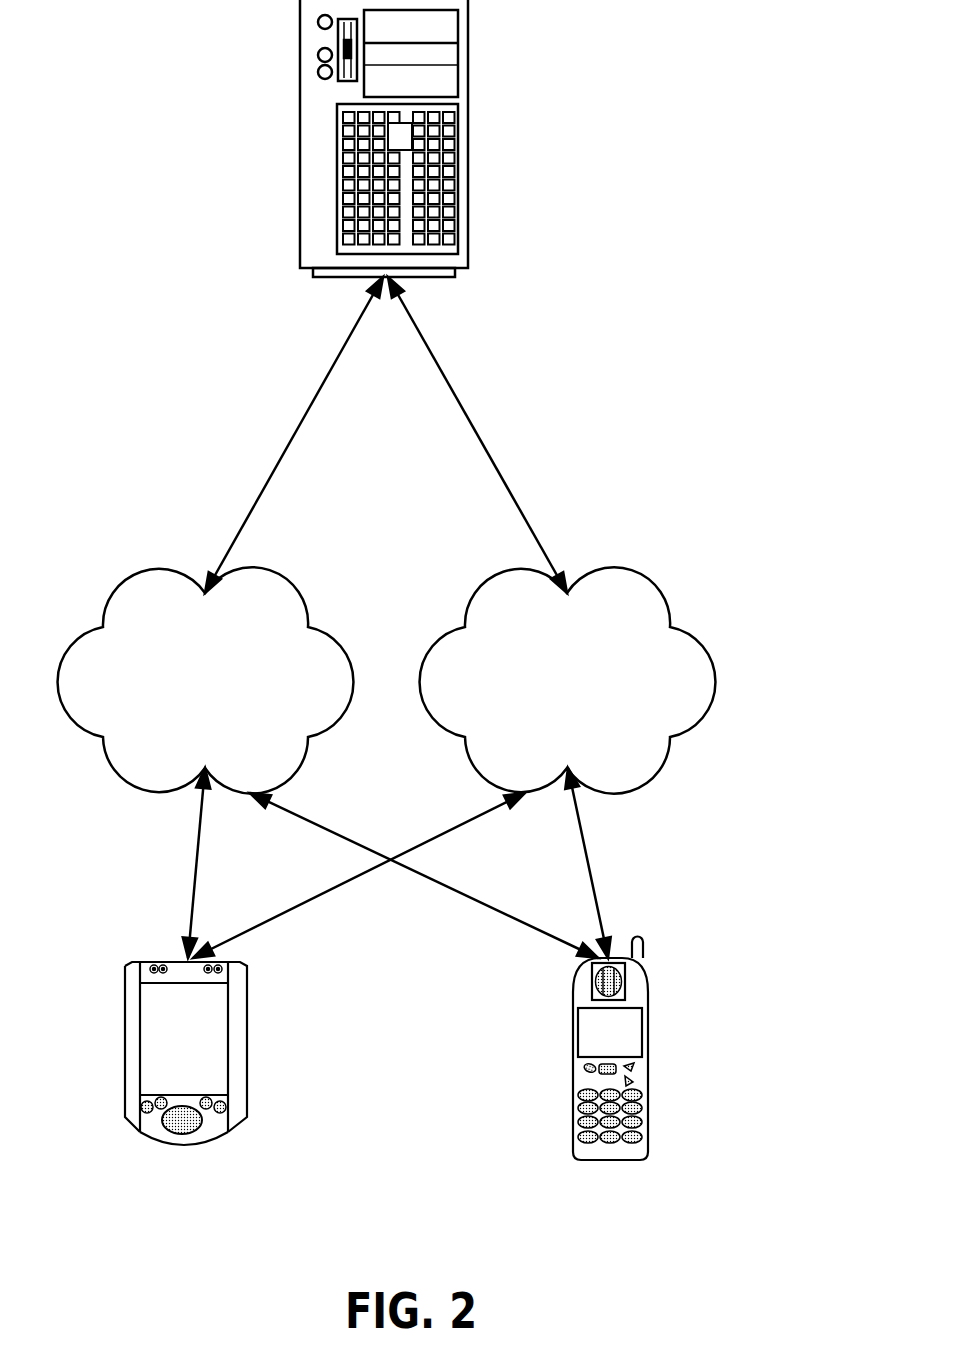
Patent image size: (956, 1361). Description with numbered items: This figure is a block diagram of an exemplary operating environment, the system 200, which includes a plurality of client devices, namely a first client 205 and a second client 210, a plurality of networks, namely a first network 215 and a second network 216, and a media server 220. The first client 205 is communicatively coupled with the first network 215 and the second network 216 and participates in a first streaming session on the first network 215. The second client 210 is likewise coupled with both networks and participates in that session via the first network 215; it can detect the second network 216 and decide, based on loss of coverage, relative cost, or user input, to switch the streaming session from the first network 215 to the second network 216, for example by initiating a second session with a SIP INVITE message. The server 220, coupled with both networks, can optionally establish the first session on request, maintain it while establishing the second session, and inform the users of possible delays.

The system 200 is at (752, 585).
The first client 205 is at (228, 1128).
The second client 210 is at (632, 1160).
The first network 215 is at (293, 770).
The second network 216 is at (655, 770).
The media server 220 is at (443, 278).